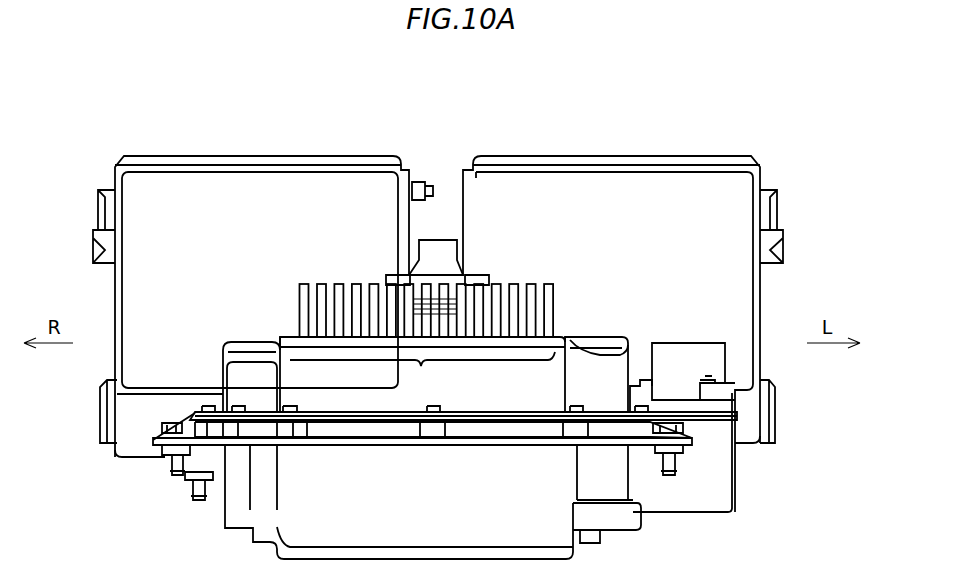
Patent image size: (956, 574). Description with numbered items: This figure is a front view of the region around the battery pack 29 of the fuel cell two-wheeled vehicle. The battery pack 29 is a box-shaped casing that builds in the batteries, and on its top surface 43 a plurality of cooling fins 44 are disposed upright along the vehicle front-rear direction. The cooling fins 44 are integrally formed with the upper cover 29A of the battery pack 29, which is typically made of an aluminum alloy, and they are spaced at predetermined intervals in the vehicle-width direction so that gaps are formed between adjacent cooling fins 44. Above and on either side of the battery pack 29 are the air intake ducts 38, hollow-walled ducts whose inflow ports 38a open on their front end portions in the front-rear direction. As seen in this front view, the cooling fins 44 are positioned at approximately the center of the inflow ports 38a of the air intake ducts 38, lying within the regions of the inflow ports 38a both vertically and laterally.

The air intake duct 38 is at (503, 153).
The inflow port 38a is at (238, 250).
The top surface 43 is at (552, 340).
The cooling fins 44 is at (425, 374).
The upper cover 29A is at (550, 386).
The battery pack 29 is at (308, 488).